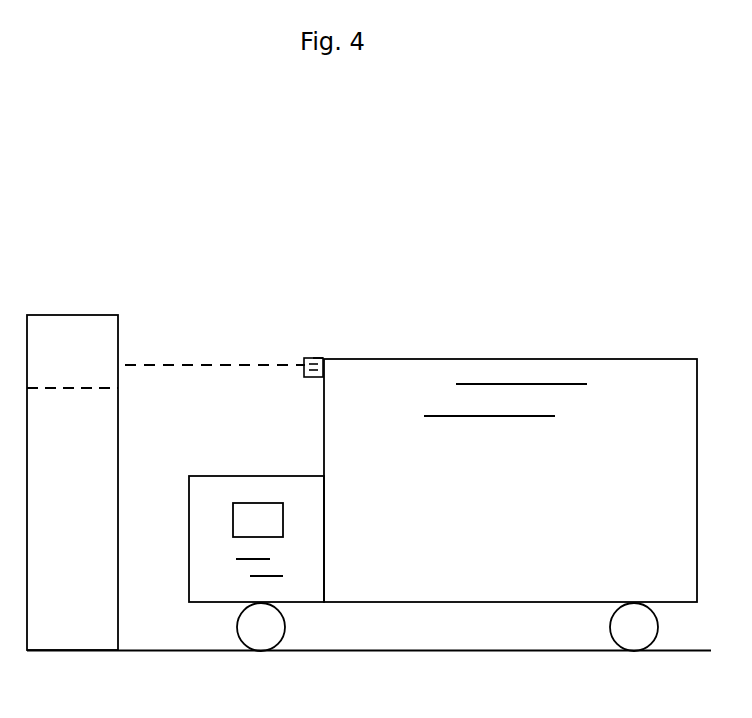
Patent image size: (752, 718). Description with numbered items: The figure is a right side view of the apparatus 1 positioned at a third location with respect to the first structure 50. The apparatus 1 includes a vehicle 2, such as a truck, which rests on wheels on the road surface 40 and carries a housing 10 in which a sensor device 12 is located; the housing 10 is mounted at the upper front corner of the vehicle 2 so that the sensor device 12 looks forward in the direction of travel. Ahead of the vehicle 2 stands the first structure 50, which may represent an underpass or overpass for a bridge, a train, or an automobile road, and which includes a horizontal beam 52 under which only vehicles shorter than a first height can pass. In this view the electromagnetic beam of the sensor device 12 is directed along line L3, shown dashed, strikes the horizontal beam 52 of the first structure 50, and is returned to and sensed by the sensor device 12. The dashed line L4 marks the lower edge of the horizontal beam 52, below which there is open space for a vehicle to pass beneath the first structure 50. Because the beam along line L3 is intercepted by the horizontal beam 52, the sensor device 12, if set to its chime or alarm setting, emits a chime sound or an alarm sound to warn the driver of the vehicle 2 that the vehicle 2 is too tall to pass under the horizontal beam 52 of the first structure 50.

The apparatus 1 is at (533, 323).
The vehicle 2 is at (450, 374).
The housing 10 is at (313, 359).
The sensor device 12 is at (318, 358).
The road surface 40 is at (460, 651).
The first structure 50 is at (70, 347).
The horizontal beam 52 is at (105, 362).
The line L3 is at (235, 360).
The line L4 is at (73, 393).